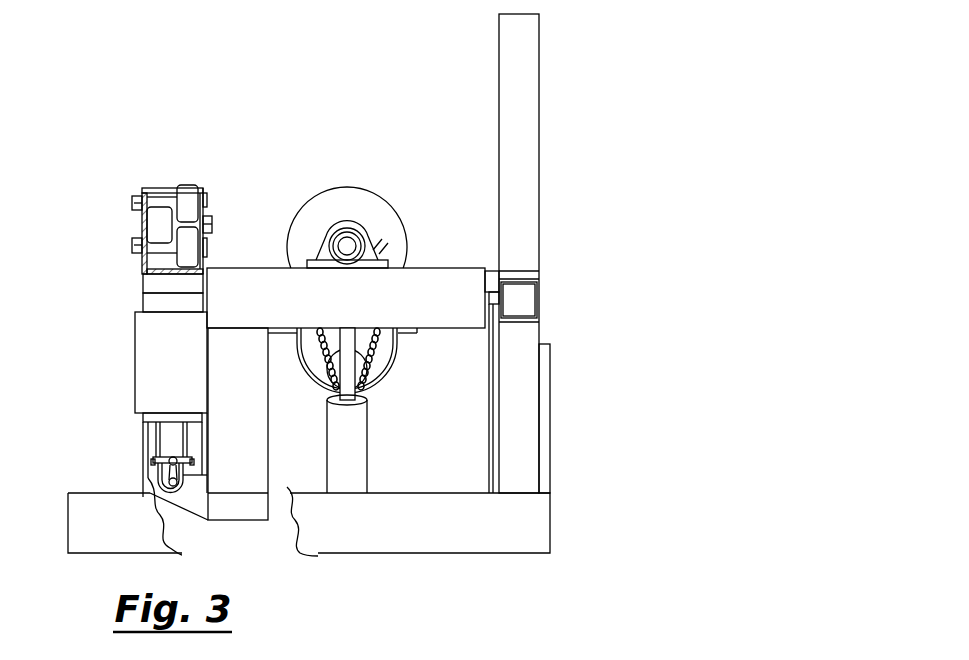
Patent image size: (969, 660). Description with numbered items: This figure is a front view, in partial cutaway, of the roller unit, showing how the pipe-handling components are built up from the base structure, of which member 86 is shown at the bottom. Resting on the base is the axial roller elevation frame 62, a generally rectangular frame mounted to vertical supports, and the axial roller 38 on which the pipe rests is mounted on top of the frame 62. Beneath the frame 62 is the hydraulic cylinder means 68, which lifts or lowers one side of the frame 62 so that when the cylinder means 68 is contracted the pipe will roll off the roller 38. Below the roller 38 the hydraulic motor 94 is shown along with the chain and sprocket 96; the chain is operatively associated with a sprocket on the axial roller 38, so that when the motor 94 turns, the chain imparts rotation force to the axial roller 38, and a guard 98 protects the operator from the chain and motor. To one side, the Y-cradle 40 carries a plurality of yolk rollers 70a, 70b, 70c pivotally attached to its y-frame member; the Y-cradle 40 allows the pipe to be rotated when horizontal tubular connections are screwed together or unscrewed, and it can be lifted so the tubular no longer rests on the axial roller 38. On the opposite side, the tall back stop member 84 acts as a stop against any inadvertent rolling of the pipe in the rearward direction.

The axial roller 38 is at (335, 197).
The Y-cradle 40 is at (102, 227).
The axial roller elevation frame 62 is at (422, 282).
The hydraulic cylinder means 68 is at (352, 467).
The yolk roller 70a is at (187, 200).
The yolk roller 70b is at (183, 255).
The yolk roller 70c is at (155, 222).
The back stop member 84 is at (528, 62).
The base structure member 86 is at (430, 540).
The hydraulic motor 94 is at (332, 368).
The chain and sprocket 96 is at (377, 352).
The guard 98 is at (382, 383).